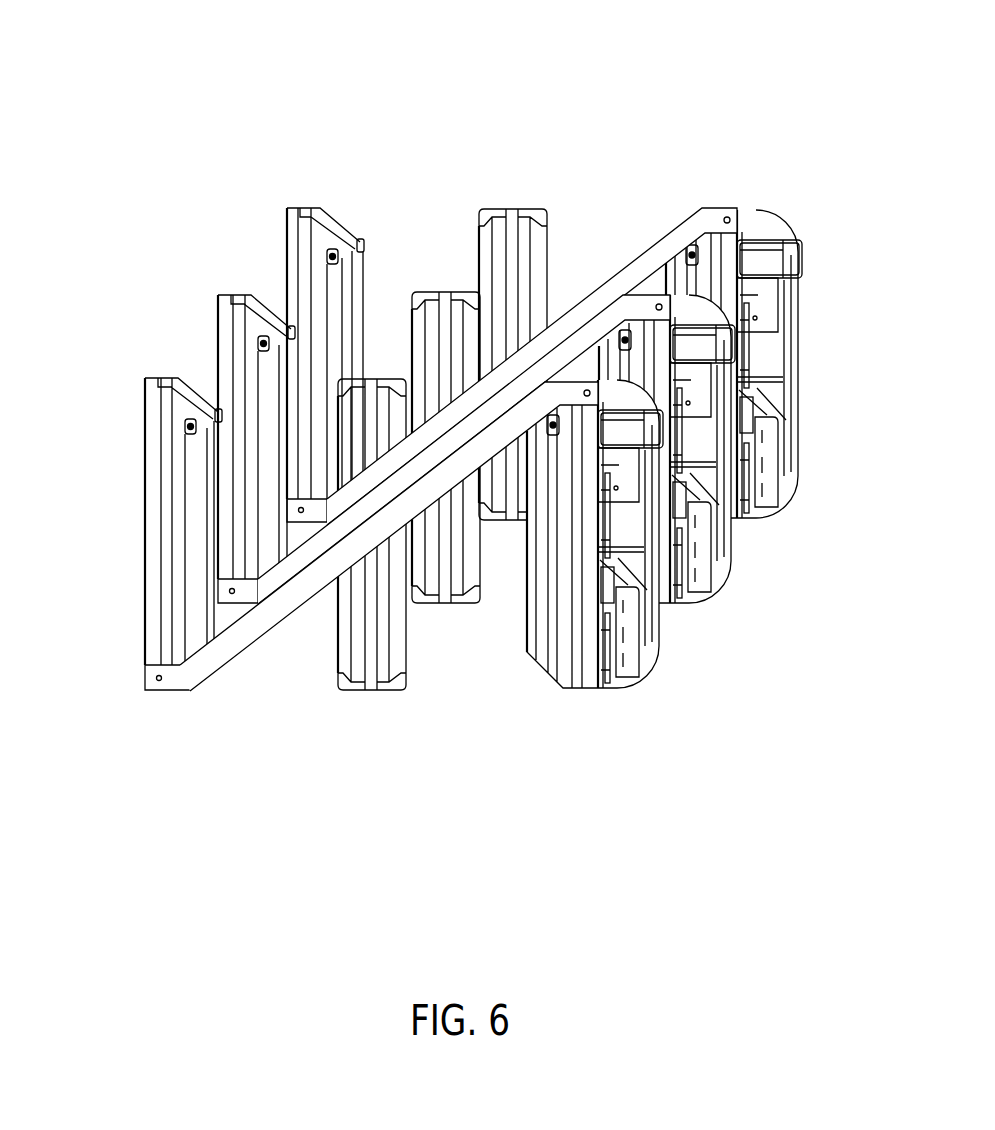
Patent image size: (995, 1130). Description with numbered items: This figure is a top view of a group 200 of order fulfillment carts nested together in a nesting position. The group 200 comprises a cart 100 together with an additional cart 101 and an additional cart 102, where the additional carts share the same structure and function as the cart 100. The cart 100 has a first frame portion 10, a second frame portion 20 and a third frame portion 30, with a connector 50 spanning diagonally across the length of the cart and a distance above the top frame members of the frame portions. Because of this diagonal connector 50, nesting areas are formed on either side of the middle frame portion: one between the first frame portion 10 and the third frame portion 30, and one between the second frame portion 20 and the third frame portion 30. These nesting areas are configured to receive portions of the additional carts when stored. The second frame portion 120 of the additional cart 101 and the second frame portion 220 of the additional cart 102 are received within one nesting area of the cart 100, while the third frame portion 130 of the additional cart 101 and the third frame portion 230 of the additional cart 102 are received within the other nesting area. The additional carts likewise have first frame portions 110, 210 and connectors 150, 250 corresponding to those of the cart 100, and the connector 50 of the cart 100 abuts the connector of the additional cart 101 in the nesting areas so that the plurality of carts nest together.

The group 200 is at (440, 397).
The first frame portion 10 is at (777, 503).
The first frame portion 110 is at (703, 597).
The first frame portion 210 is at (568, 690).
The second frame portion 20 is at (150, 512).
The third frame portion 30 is at (362, 691).
The third frame portion 130 is at (448, 600).
The third frame portion 230 is at (507, 217).
The connector 50 is at (238, 636).
The connector 150 is at (587, 345).
The connector 250 is at (655, 252).
The order fulfillment cart 100 is at (166, 437).
The additional cart 101 is at (240, 312).
The additional cart 102 is at (308, 230).
The second frame portion 120 is at (236, 362).
The second frame portion 220 is at (293, 272).